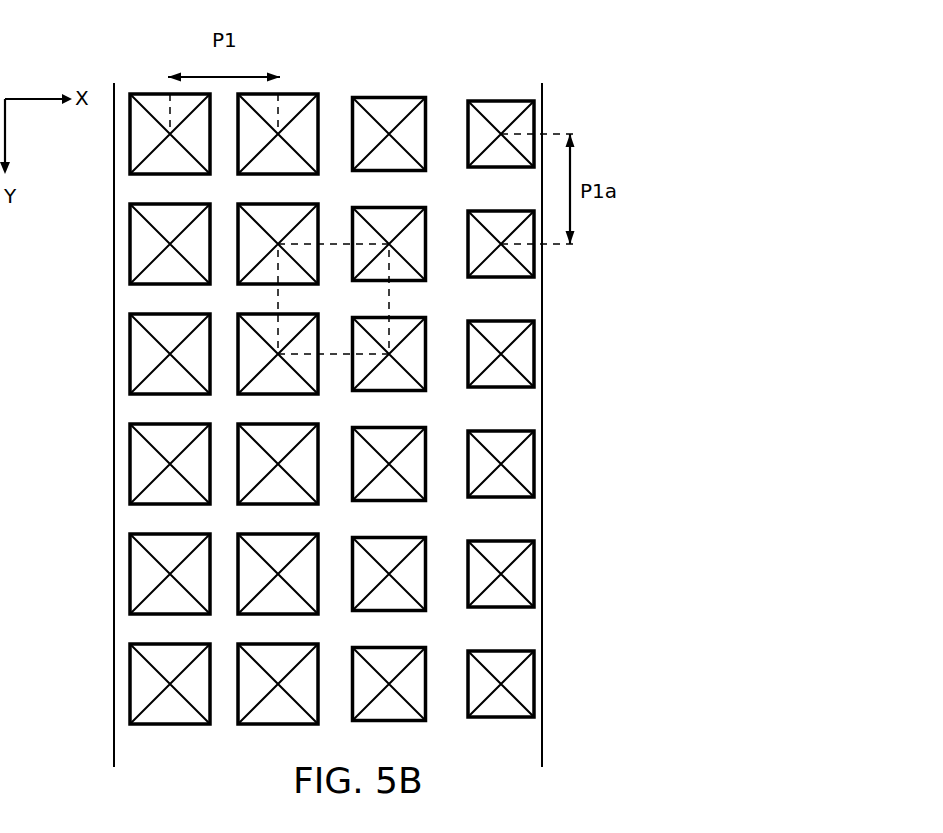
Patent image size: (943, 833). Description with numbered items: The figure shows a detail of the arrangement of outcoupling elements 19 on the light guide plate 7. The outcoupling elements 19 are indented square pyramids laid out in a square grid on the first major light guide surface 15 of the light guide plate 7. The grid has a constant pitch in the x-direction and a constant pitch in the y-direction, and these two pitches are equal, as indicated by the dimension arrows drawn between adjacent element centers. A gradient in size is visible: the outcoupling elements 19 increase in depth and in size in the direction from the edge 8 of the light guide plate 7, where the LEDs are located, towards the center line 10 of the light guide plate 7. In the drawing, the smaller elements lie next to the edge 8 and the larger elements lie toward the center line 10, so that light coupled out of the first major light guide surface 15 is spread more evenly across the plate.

The light guide plate 7 is at (287, 425).
The center line 10 is at (114, 305).
The first major light guide surface 15 is at (521, 518).
The edge 8 is at (542, 363).
The outcoupling elements 19 is at (148, 463).